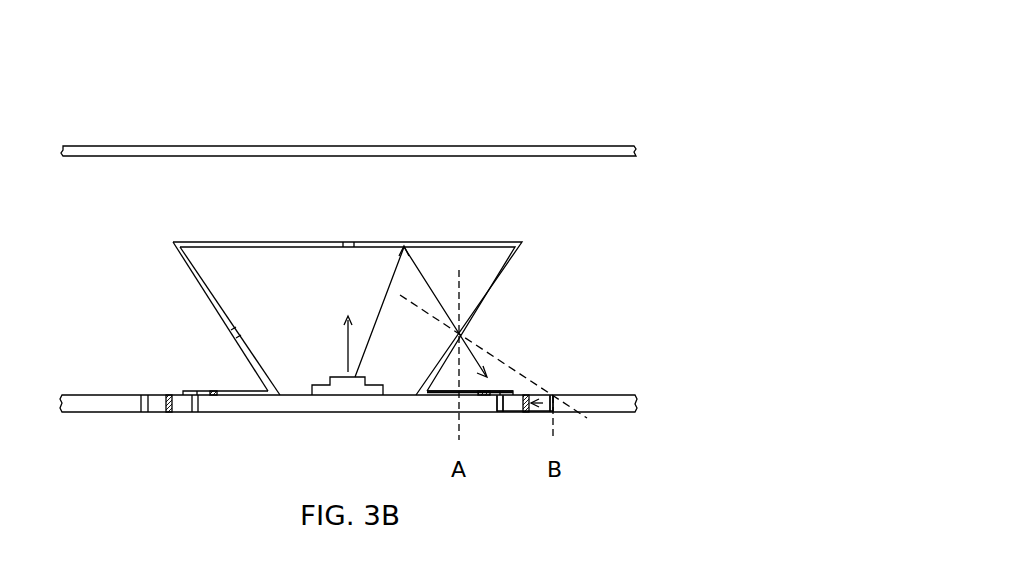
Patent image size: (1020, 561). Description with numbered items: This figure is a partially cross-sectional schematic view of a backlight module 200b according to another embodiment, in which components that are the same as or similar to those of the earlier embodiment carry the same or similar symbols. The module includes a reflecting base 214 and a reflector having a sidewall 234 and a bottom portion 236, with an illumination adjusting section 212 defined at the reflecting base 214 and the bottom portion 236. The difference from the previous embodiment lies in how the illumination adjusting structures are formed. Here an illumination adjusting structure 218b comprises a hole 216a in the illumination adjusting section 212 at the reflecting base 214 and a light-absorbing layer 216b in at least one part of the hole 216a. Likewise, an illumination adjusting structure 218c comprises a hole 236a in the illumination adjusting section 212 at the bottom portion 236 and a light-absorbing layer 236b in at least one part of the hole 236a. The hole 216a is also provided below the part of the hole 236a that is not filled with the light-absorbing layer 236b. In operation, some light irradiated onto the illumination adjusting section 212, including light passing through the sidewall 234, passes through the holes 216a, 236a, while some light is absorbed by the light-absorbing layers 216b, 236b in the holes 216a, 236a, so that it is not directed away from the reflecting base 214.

The backlight module 200b is at (87, 122).
The sidewall 234 is at (497, 289).
The bottom portion 236 is at (512, 392).
The hole 236a is at (481, 393).
The light-absorbing layer 236b is at (488, 389).
The illumination adjusting structure 218c is at (615, 300).
The reflecting base 214 is at (626, 404).
The hole 216a is at (480, 404).
The light-absorbing layer 216b is at (527, 412).
The illumination adjusting structure 218b is at (640, 440).
The illumination adjusting section 212 is at (552, 436).